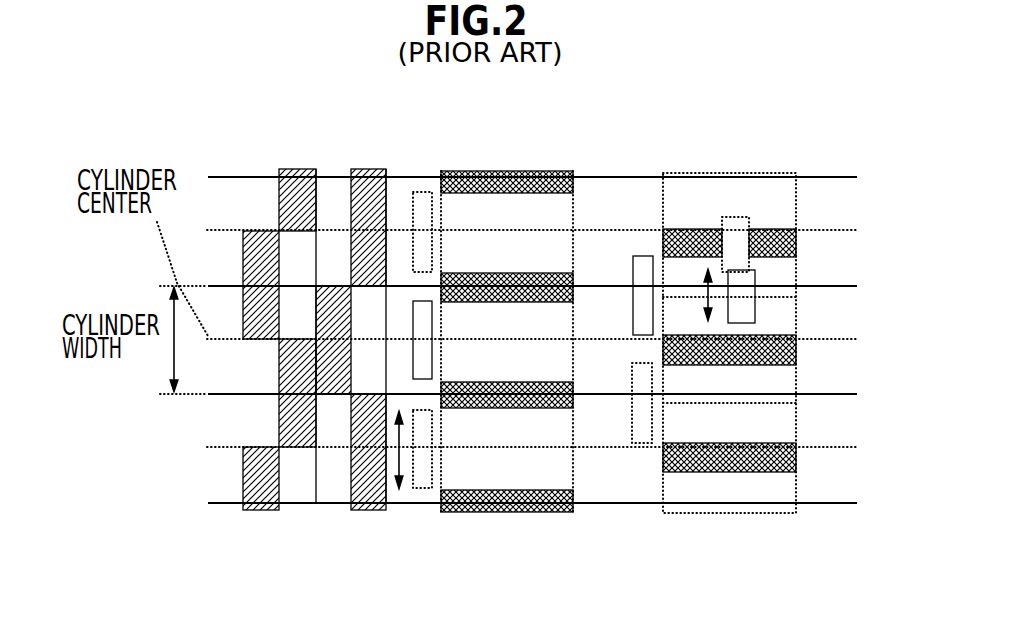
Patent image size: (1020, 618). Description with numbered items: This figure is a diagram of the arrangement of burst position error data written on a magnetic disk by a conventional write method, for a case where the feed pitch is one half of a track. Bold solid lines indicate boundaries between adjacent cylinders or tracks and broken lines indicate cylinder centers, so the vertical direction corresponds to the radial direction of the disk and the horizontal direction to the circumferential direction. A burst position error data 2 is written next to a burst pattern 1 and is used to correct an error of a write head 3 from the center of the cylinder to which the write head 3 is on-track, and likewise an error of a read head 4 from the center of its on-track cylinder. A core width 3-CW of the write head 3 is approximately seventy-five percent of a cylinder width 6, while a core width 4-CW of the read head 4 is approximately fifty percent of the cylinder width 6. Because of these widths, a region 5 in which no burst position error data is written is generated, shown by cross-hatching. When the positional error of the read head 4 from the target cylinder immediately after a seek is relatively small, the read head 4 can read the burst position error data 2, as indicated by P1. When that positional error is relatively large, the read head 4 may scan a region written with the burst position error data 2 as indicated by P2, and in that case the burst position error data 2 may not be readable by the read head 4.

The burst pattern 1 is at (400, 515).
The burst position error data 2 is at (445, 147).
The write head 3 is at (412, 192).
The read head 4 is at (722, 217).
The region in which no burst position error data is written 5 is at (573, 193).
The cylinder width 6 is at (174, 347).
The core width of the write head 3-CW is at (413, 462).
The core width of the read head 4-CW is at (706, 303).
The read head position with small positional error P1 is at (757, 307).
The read head position with large positional error P2 is at (752, 223).